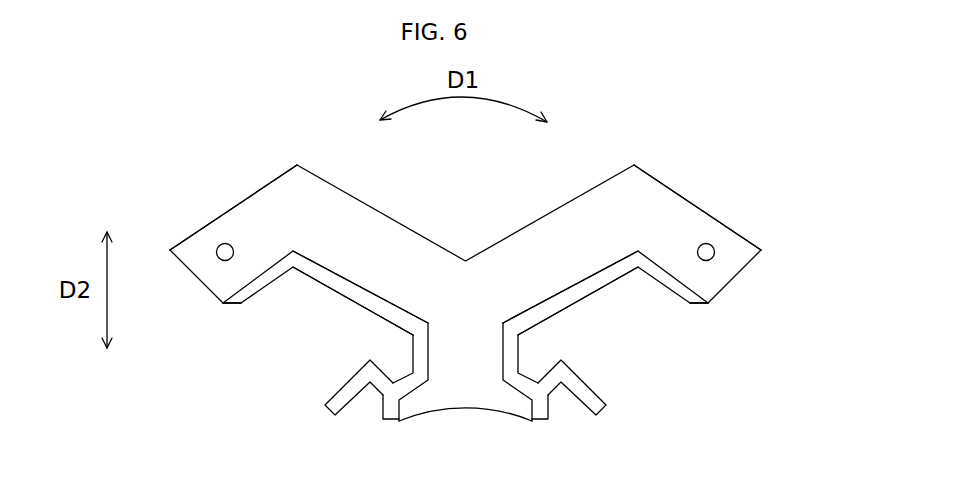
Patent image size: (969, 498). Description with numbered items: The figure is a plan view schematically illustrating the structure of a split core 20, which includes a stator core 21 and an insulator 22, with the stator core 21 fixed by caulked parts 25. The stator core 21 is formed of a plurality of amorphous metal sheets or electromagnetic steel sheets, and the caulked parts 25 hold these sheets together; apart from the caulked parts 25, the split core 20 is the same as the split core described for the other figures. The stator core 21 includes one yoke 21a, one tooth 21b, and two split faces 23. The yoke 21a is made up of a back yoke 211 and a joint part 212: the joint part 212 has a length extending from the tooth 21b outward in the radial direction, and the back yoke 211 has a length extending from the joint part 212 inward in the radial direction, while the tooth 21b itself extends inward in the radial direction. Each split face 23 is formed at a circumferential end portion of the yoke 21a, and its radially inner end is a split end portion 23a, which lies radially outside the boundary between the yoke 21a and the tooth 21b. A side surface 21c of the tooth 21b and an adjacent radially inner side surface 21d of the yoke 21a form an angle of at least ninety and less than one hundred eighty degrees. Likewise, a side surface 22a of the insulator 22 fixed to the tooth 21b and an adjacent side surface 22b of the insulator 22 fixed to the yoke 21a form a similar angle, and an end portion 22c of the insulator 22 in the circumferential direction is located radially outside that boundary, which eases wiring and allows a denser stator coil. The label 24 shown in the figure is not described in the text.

The split core 20 is at (165, 150).
The stator core 21 is at (297, 162).
The back yoke 211 is at (238, 227).
The joint part 212 is at (370, 225).
The yoke 21a is at (787, 153).
The tooth 21b is at (468, 353).
The side surface of the tooth 21c is at (427, 363).
The side surface of the yoke 21d is at (372, 300).
The insulator 22 is at (320, 276).
The side surface of the insulator fixed to the tooth 22a is at (413, 353).
The side surface of the insulator fixed to the yoke 22b is at (373, 312).
The end portion of the insulator 22c is at (243, 305).
The split face 23 is at (187, 275).
The split end portion 23a is at (222, 306).
The upper edge portion 24 is at (218, 210).
The caulked part 25 is at (217, 247).